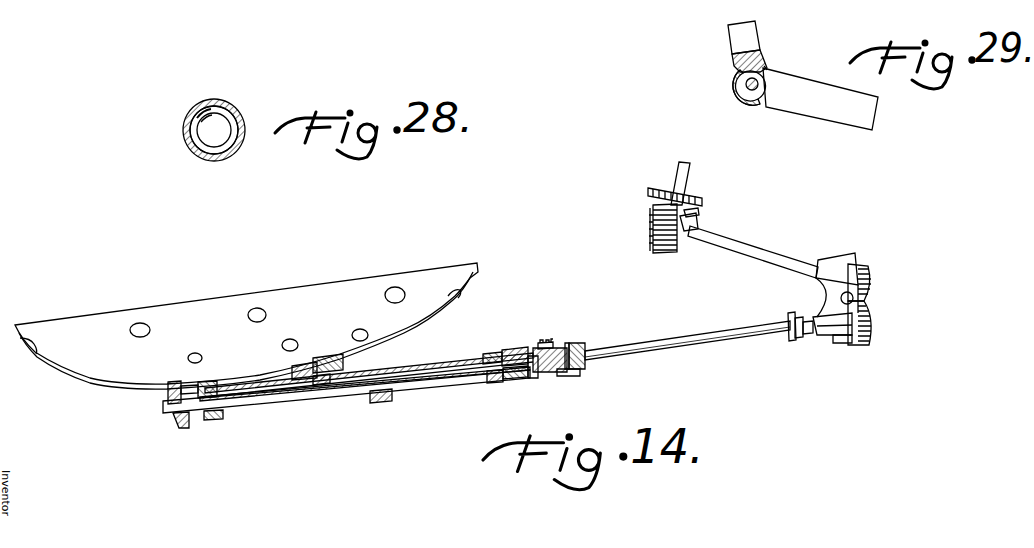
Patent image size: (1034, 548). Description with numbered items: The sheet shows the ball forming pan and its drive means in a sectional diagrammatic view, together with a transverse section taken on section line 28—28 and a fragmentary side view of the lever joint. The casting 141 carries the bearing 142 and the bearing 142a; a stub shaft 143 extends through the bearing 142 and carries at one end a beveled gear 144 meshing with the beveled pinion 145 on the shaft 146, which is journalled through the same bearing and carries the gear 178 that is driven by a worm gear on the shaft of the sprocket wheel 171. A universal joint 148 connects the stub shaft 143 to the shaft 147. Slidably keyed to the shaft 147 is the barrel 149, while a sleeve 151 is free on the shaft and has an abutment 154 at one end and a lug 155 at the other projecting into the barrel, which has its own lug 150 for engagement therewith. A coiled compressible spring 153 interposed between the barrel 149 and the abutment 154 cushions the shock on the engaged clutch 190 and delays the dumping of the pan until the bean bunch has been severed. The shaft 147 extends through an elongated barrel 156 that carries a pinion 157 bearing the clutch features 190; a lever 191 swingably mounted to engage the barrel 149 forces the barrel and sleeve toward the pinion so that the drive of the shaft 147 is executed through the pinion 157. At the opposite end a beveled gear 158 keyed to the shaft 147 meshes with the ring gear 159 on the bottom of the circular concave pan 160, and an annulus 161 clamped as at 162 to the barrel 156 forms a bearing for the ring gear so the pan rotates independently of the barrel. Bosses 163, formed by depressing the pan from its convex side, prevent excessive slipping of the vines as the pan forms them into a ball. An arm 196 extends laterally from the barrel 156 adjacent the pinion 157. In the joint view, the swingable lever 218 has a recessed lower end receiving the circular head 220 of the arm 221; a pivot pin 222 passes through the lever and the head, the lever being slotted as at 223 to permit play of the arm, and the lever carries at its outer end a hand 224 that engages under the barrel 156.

In FIG. 14, the section line 28 is at (567, 341).
In FIG. 14, the casting 141 is at (826, 295).
In FIG. 14, the bearing 142 is at (840, 264).
In FIG. 14, the bearing 142a is at (833, 337).
In FIG. 14, the stub shaft 143 is at (813, 337).
In FIG. 14, the beveled gear 144 is at (868, 320).
In FIG. 14, the beveled pinion 145 is at (869, 274).
In FIG. 14, the shaft 146 is at (758, 249).
In FIG. 14, the shaft 147 is at (707, 347).
In FIG. 14, the universal joint 148 is at (790, 338).
In FIG. 28, the barrel 149 is at (241, 120).
In FIG. 14, the barrel 149 is at (579, 343).
In FIG. 28, the lug 150 is at (195, 143).
In FIG. 14, the sleeve 151 is at (560, 375).
In FIG. 14, the coiled compressible spring 153 is at (548, 342).
In FIG. 14, the abutment 154 is at (552, 376).
In FIG. 28, the lug 155 is at (227, 108).
In FIG. 14, the elongated barrel 156 is at (428, 353).
In FIG. 14, the pinion 157 is at (518, 347).
In FIG. 14, the beveled gear 158 is at (177, 427).
In FIG. 14, the ring gear 159 is at (166, 388).
In FIG. 14, the circular concave pan 160 is at (55, 366).
In FIG. 14, the annulus 161 is at (302, 363).
In FIG. 14, the clamp 162 is at (312, 401).
In FIG. 14, the bosses 163 is at (394, 289).
In FIG. 14, the sprocket wheel 171 is at (702, 200).
In FIG. 14, the gear 178 is at (664, 248).
In FIG. 14, the clutch features 190 is at (540, 379).
In FIG. 14, the lever 191 is at (607, 360).
In FIG. 14, the arm 196 is at (500, 383).
In FIG. 29, the swingable lever 218 is at (757, 39).
In FIG. 29, the circular head 220 is at (742, 106).
In FIG. 29, the arm 221 is at (842, 110).
In FIG. 29, the pivot pin 222 is at (746, 85).
In FIG. 29, the slot 223 is at (765, 71).
In FIG. 14, the hand 224 is at (380, 402).